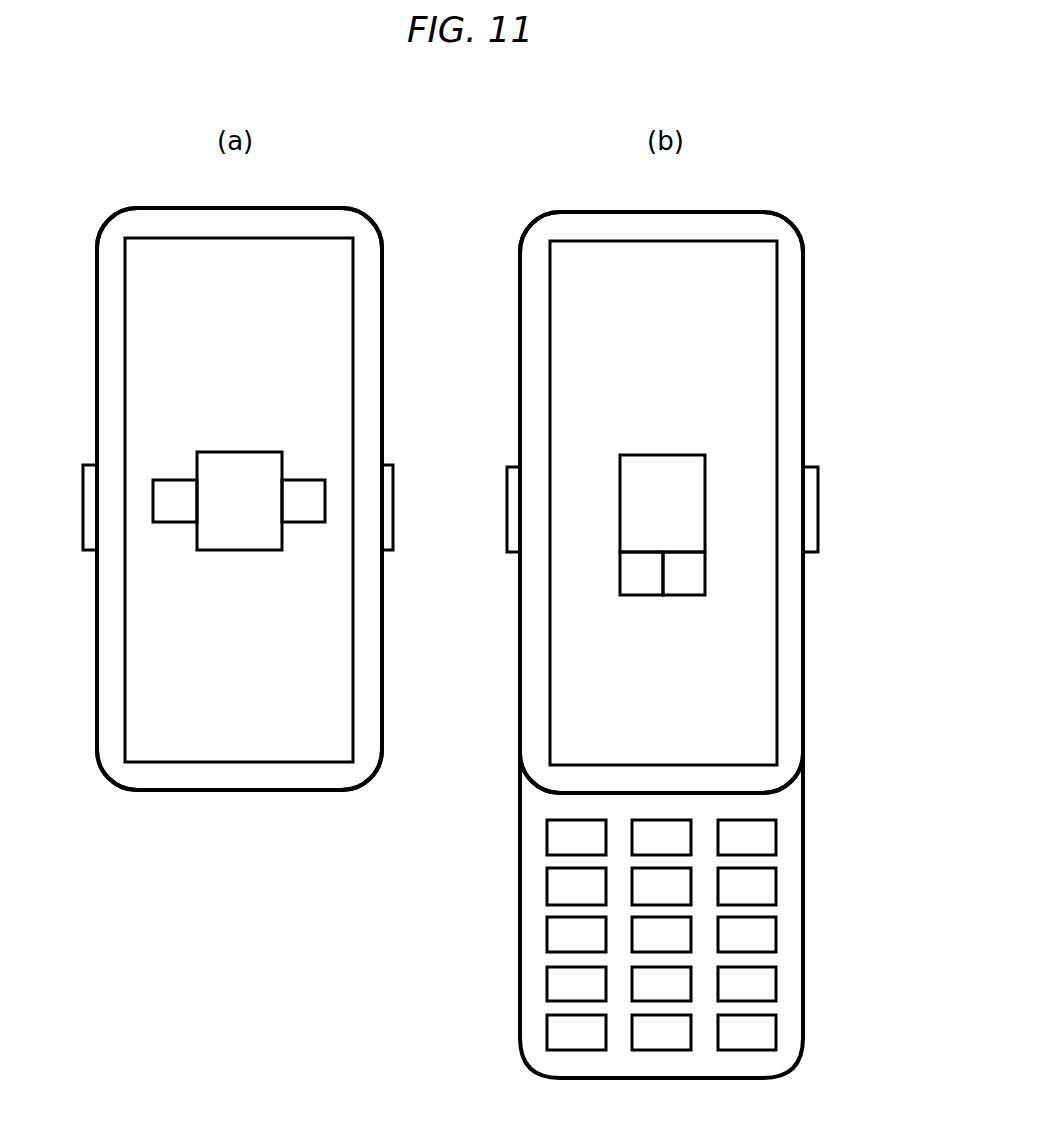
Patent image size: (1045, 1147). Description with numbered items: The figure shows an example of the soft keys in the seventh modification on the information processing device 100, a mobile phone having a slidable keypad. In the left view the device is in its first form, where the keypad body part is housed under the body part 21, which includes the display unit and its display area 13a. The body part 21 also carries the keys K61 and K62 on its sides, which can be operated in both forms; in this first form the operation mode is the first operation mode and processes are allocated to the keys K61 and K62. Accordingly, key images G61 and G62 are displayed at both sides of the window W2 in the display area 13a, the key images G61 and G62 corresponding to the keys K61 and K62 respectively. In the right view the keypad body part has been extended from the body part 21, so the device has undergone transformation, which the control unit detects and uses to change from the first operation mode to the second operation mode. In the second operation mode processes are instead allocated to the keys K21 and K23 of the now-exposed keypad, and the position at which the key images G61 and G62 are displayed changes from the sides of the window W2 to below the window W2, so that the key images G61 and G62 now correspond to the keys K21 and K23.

The information processing device 100 is at (350, 186).
The body part 21 is at (372, 260).
The display area 13a is at (337, 334).
The window W2 is at (236, 456).
The key K61 is at (88, 514).
The key K62 is at (395, 522).
The key image G61 is at (163, 524).
The key image G62 is at (294, 524).
The key K21 is at (557, 893).
The key K23 is at (768, 893).